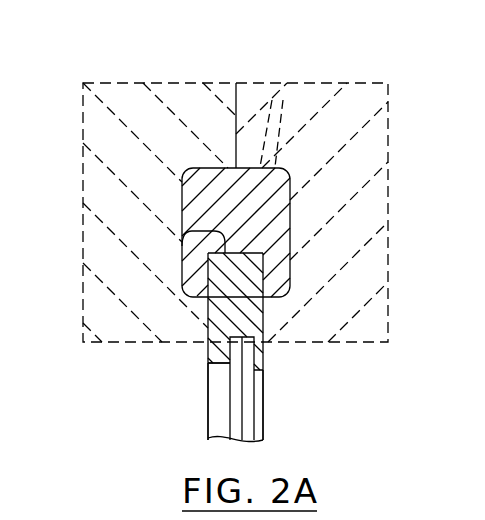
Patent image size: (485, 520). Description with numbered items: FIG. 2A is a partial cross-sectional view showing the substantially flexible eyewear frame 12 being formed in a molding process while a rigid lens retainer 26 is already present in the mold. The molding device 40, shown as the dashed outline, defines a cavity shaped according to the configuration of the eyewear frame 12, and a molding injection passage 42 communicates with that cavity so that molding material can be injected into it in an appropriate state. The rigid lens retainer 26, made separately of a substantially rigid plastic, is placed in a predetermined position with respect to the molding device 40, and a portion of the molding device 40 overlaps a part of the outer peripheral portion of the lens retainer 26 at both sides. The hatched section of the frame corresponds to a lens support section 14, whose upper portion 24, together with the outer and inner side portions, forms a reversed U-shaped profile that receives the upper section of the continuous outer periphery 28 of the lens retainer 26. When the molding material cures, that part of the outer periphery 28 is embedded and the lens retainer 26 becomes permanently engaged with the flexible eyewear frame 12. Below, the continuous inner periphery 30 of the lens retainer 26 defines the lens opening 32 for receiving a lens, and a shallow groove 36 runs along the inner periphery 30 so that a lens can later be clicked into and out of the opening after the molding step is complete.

The substantially flexible eyewear frame 12 is at (182, 195).
The lens support section 14 is at (216, 167).
The upper portion 24 is at (290, 275).
The rigid lens retainer 26 is at (208, 423).
The outer periphery 28 is at (182, 233).
The inner periphery 30 is at (223, 364).
The lens opening 32 is at (243, 415).
The shallow groove 36 is at (242, 345).
The molding device 40 is at (388, 142).
The molding injection passage 42 is at (277, 100).